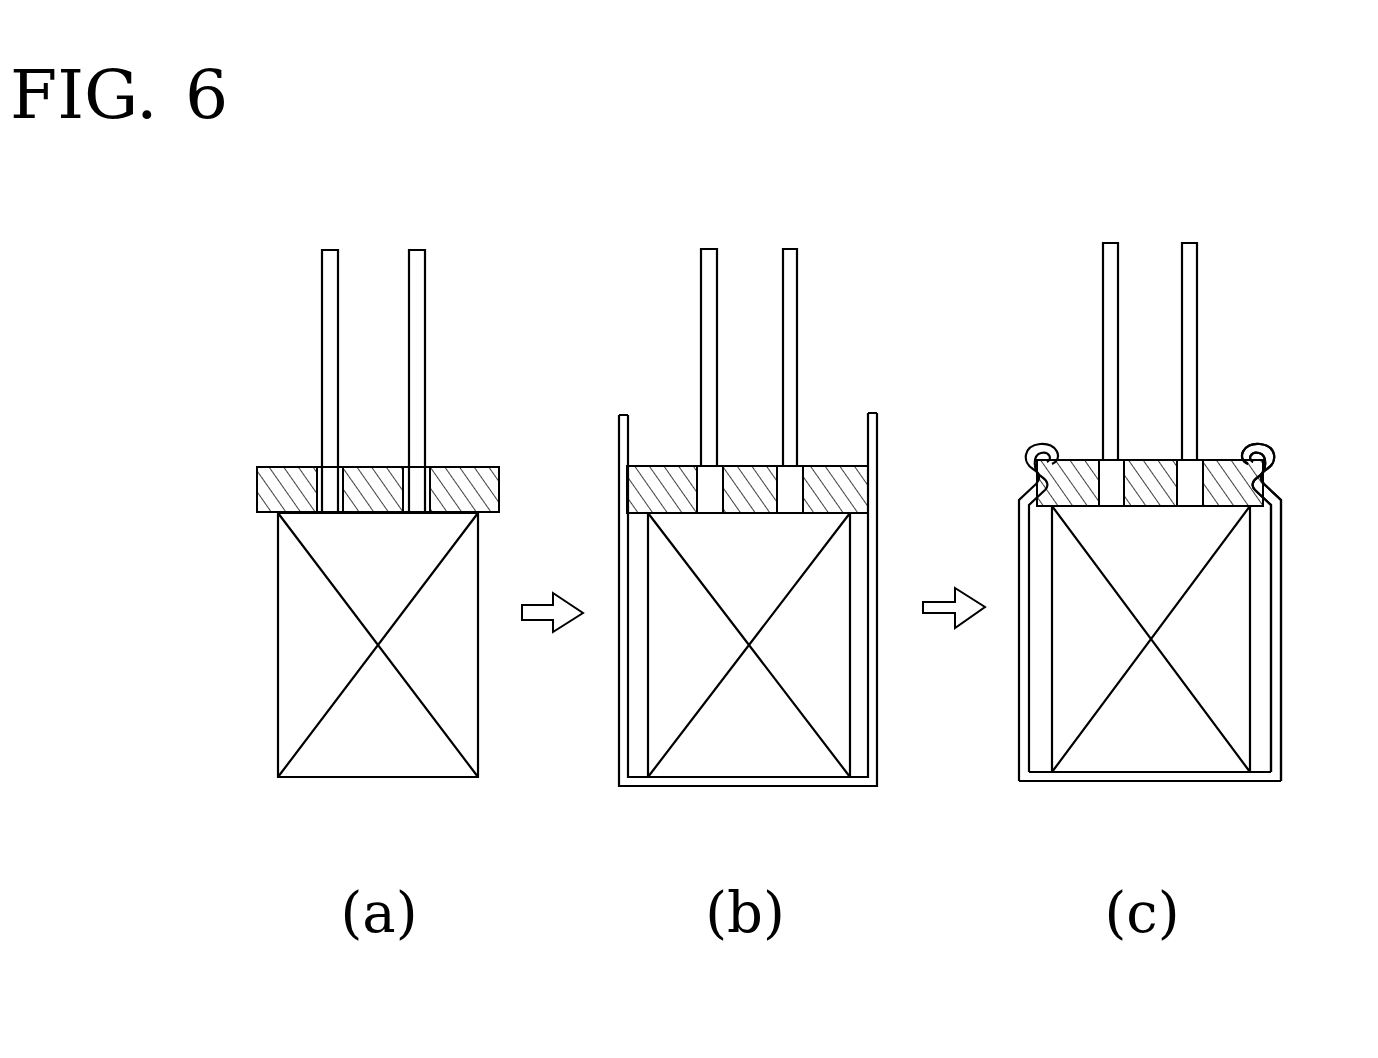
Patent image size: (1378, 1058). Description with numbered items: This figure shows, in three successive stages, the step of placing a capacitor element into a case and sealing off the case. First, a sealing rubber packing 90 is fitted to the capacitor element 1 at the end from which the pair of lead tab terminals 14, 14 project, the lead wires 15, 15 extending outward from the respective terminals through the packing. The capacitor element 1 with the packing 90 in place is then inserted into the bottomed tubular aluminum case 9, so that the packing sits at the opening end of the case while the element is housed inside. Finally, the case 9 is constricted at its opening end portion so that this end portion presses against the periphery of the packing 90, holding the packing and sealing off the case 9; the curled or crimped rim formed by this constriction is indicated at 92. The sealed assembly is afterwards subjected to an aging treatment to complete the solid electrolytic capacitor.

The capacitor element 1 is at (283, 642).
The aluminum case 9 is at (619, 460).
The lead tab terminals 14 is at (340, 480).
The lead wires 15 is at (327, 305).
The sealing rubber packing 90 is at (278, 470).
The curled edge (crimped portion) 92 is at (1281, 470).